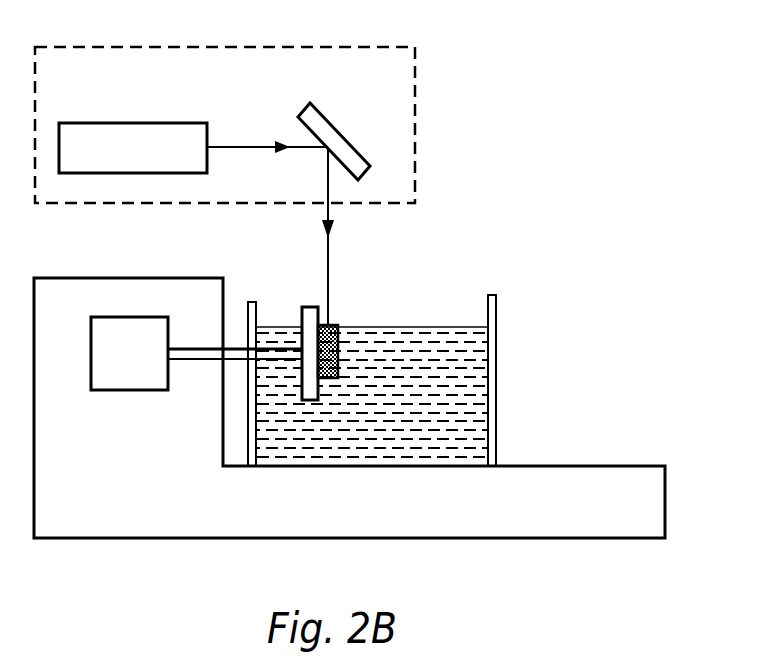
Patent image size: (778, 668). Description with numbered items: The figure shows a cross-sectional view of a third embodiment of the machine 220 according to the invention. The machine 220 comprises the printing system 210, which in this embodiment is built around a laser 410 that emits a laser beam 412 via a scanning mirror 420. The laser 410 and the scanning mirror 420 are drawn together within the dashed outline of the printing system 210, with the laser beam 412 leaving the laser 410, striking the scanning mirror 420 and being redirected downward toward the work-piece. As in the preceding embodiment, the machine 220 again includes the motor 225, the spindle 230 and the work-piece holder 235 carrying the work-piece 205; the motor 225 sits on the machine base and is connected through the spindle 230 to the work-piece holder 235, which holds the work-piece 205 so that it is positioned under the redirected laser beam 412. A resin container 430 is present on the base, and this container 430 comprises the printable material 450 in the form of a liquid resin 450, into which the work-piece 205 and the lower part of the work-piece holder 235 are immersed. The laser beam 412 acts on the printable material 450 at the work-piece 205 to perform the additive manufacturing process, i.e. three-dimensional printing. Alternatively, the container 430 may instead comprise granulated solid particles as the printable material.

The machine 220 is at (575, 84).
The printing system 210 is at (415, 125).
The laser 410 is at (137, 140).
The scanning mirror 420 is at (332, 140).
The laser beam 412 is at (332, 280).
The work-piece holder 235 is at (308, 310).
The work-piece 205 is at (338, 347).
The motor 225 is at (125, 353).
The spindle 230 is at (192, 355).
The printable material 450 is at (457, 358).
The resin container 430 is at (497, 395).